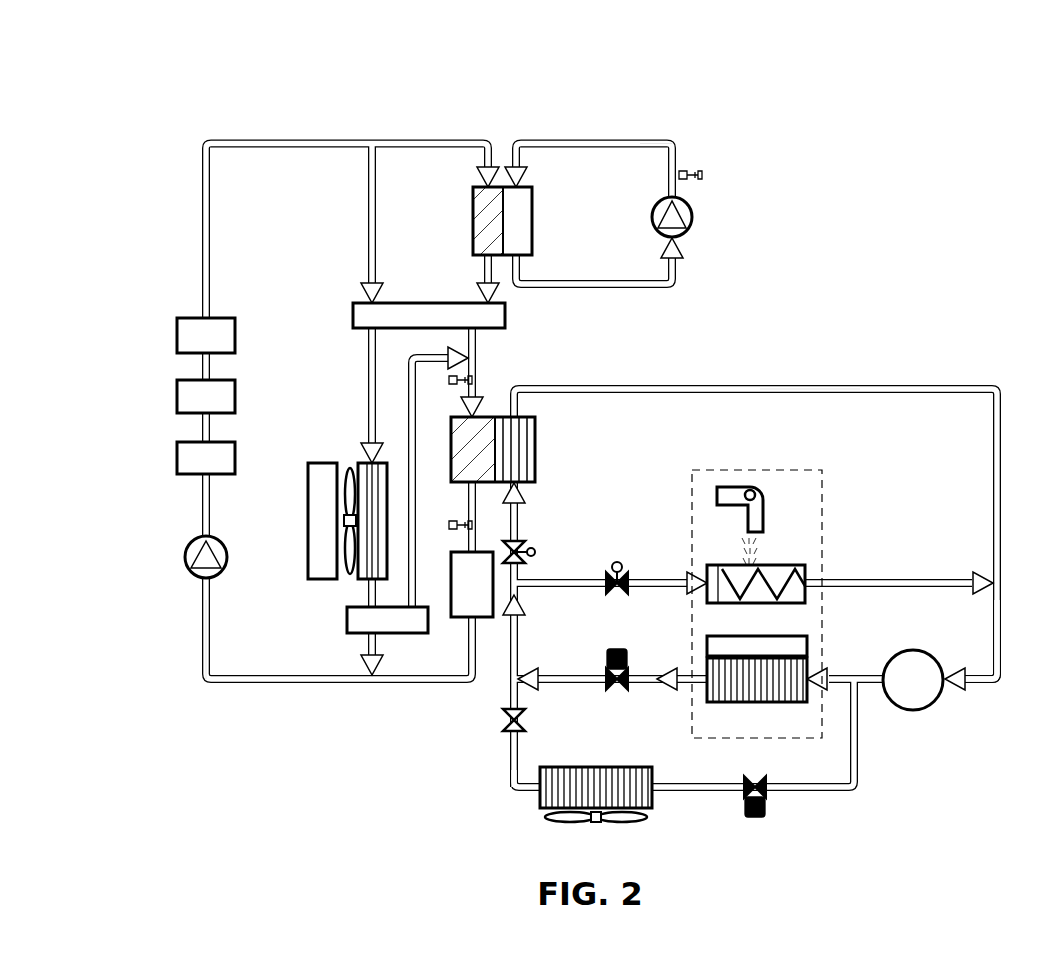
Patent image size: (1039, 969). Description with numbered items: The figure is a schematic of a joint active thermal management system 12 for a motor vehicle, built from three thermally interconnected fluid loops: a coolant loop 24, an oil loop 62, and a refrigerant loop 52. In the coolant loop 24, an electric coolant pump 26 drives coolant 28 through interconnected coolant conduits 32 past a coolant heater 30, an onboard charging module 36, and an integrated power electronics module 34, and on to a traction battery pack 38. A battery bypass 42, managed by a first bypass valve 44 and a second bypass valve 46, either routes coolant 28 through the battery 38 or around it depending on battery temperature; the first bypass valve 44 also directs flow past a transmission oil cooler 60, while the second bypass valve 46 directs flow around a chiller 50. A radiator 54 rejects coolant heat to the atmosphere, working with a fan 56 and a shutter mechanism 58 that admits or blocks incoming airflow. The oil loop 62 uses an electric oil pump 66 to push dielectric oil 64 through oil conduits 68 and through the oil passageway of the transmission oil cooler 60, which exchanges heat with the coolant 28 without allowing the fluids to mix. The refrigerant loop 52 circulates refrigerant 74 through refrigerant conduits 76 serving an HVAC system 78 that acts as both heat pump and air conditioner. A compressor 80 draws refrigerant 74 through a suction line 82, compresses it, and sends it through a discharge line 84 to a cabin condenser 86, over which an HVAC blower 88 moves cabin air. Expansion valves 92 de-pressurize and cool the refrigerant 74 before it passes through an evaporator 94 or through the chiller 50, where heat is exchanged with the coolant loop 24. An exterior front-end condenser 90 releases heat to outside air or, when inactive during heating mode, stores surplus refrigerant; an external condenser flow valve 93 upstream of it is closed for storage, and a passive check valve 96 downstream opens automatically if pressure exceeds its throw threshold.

The joint active thermal management (JATM) system 12 is at (903, 161).
The coolant loop 24 is at (291, 86).
The electric coolant pump 26 is at (186, 553).
The coolant 28 is at (200, 628).
The coolant heater 30 is at (177, 325).
The coolant conduits 32 is at (227, 140).
The integrated power electronics (IPE) module 34 is at (177, 446).
The onboard charging module (OBCM) 36 is at (177, 385).
The traction battery pack 38 is at (455, 619).
The battery bypass 42 is at (336, 395).
The first bypass valve 44 is at (352, 305).
The second bypass valve 46 is at (347, 624).
The chiller 50 is at (537, 432).
The refrigerant loop 52 is at (915, 331).
The radiator 54 is at (357, 465).
The fan 56 is at (347, 576).
The shutter mechanism 58 is at (307, 492).
The transmission oil cooler (TOC) 60 is at (534, 195).
The oil loop 62 is at (622, 128).
The oil 64 is at (677, 143).
The electric oil pump 66 is at (694, 214).
The oil conduits 68 is at (660, 141).
The refrigerant 74 is at (808, 388).
The refrigerant conduits 76 is at (947, 388).
The HVAC system 78 is at (805, 468).
The compressor 80 is at (925, 705).
The suction line 82 is at (993, 627).
The discharge line 84 is at (852, 676).
The cabin condenser 86 is at (707, 665).
The HVAC blower 88 is at (716, 490).
The exterior front-end condenser 90 is at (540, 808).
The expansion valves 92 is at (532, 548).
The External Condenser Flow Valve (ECFV) 93 is at (740, 800).
The evaporator 94 is at (793, 565).
The check valve 96 is at (524, 724).